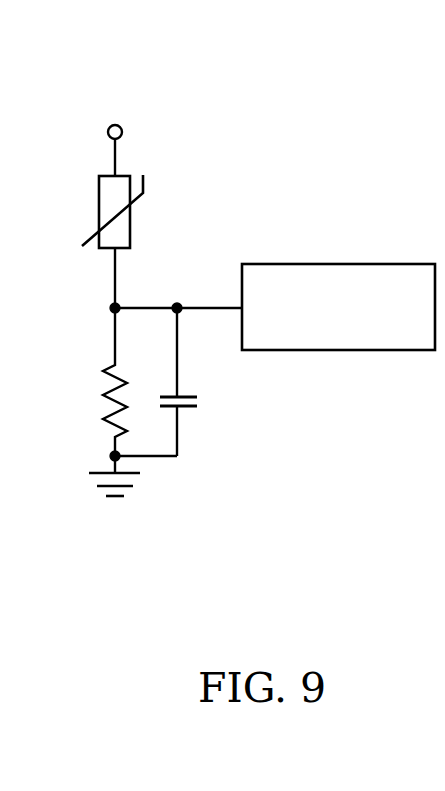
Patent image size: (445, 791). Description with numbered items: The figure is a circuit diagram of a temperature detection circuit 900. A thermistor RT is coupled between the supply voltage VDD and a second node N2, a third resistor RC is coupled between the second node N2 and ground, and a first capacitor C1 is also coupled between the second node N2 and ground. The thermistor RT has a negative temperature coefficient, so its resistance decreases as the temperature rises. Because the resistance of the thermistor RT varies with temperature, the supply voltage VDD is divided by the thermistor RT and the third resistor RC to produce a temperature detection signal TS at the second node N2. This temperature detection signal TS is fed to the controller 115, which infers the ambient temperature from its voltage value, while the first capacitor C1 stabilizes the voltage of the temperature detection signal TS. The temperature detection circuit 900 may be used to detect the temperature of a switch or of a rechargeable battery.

The controller 115 is at (242, 263).
The temperature detection circuit 900 is at (358, 543).
The thermistor RT is at (99, 205).
The third resistor RC is at (102, 408).
The first capacitor C1 is at (200, 402).
The second node N2 is at (110, 308).
The temperature detection signal TS is at (179, 291).
The supply voltage VDD is at (108, 133).